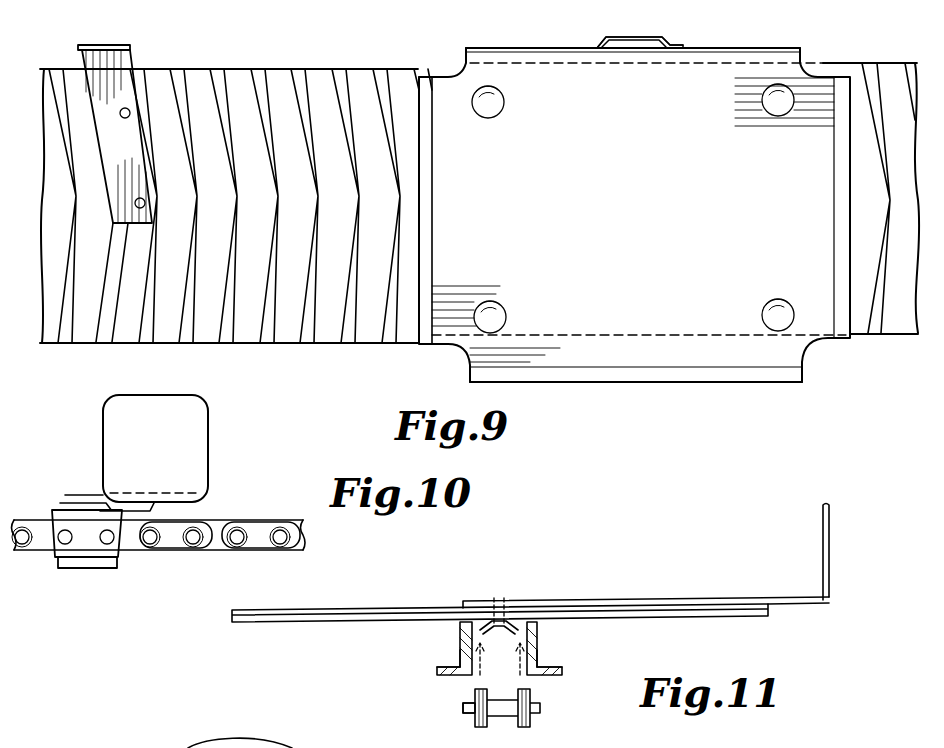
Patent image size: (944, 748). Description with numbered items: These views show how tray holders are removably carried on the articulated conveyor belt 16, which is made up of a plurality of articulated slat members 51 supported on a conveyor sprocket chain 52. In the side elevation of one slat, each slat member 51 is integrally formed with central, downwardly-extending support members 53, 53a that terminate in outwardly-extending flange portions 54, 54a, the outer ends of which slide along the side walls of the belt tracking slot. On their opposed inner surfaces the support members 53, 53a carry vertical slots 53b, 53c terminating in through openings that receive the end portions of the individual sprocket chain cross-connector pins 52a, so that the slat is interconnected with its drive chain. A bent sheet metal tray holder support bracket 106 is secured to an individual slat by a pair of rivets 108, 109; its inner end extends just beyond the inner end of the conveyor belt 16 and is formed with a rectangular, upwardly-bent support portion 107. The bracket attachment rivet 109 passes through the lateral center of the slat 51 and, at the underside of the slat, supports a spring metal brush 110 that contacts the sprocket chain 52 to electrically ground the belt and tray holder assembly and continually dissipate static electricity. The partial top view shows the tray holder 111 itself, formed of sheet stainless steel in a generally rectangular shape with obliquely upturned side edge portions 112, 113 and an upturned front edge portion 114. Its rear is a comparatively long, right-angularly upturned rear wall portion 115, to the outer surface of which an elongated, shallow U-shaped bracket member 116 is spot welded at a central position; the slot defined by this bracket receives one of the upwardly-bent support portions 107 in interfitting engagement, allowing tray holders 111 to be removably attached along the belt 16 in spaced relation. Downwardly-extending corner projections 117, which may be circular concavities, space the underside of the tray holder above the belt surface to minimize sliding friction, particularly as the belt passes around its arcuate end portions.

In FIG. 9, the articulated conveyor belt 16 is at (369, 60).
In FIG. 11, the articulated conveyor belt 16 is at (340, 608).
In FIG. 9, the slat member 51 is at (284, 78).
In FIG. 10, the slat member 51 is at (60, 508).
In FIG. 11, the slat member 51 is at (290, 609).
In FIG. 10, the conveyor sprocket chain 52 is at (218, 546).
In FIG. 11, the conveyor sprocket chain 52 is at (501, 727).
In FIG. 11, the sprocket chain cross-connector pin 52a is at (466, 708).
In FIG. 11, the downwardly-extending support member 53 is at (458, 632).
In FIG. 11, the downwardly-extending support member 53a is at (540, 630).
In FIG. 11, the vertical slot 53b is at (462, 658).
In FIG. 11, the vertical slot 53c is at (535, 660).
In FIG. 11, the outwardly-extending flange portion 54 is at (452, 676).
In FIG. 11, the outwardly-extending flange portion 54a is at (560, 676).
In FIG. 9, the tray holder support bracket 106 is at (122, 184).
In FIG. 10, the tray holder support bracket 106 is at (82, 494).
In FIG. 11, the tray holder support bracket 106 is at (703, 600).
In FIG. 9, the upwardly-bent support portion 107 is at (120, 46).
In FIG. 10, the upwardly-bent support portion 107 is at (160, 467).
In FIG. 11, the upwardly-bent support portion 107 is at (822, 540).
In FIG. 9, the rivet 108 is at (130, 108).
In FIG. 9, the bracket attachment rivet 109 is at (152, 206).
In FIG. 11, the bracket attachment rivet 109 is at (503, 596).
In FIG. 11, the spring metal brush 110 is at (519, 620).
In FIG. 9, the tray holder 111 is at (635, 193).
In FIG. 9, the upturned side edge portion 112 is at (430, 240).
In FIG. 9, the upturned side edge portion 113 is at (834, 234).
In FIG. 9, the front edge portion 114 is at (678, 372).
In FIG. 9, the upturned rear wall portion 115 is at (562, 48).
In FIG. 9, the U-shaped bracket member 116 is at (638, 36).
In FIG. 9, the corner projection 117 is at (510, 110).